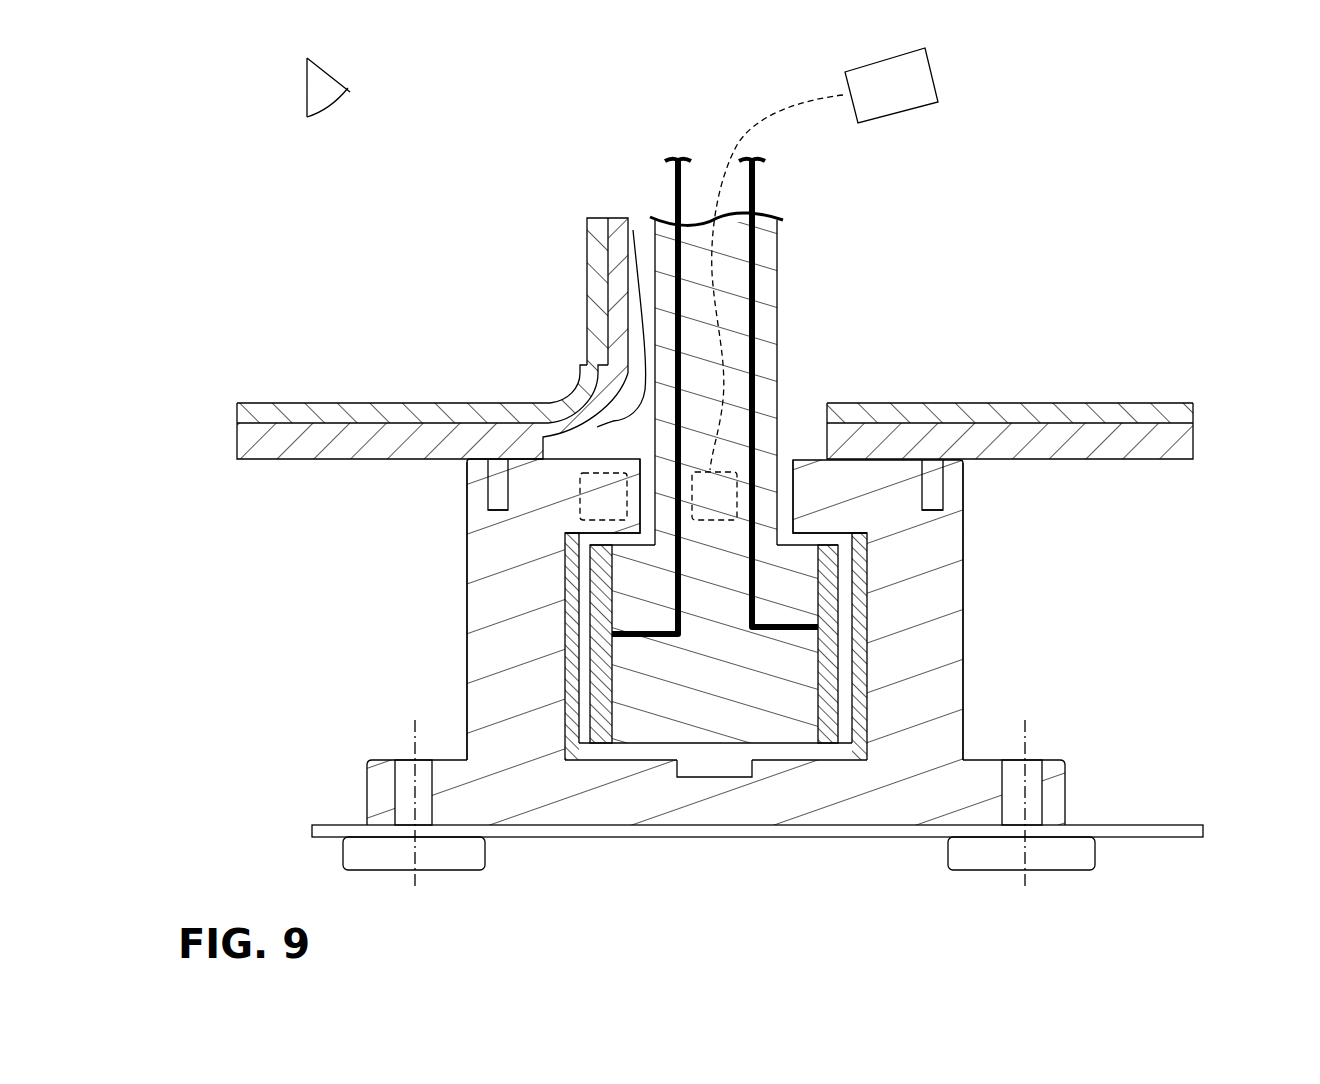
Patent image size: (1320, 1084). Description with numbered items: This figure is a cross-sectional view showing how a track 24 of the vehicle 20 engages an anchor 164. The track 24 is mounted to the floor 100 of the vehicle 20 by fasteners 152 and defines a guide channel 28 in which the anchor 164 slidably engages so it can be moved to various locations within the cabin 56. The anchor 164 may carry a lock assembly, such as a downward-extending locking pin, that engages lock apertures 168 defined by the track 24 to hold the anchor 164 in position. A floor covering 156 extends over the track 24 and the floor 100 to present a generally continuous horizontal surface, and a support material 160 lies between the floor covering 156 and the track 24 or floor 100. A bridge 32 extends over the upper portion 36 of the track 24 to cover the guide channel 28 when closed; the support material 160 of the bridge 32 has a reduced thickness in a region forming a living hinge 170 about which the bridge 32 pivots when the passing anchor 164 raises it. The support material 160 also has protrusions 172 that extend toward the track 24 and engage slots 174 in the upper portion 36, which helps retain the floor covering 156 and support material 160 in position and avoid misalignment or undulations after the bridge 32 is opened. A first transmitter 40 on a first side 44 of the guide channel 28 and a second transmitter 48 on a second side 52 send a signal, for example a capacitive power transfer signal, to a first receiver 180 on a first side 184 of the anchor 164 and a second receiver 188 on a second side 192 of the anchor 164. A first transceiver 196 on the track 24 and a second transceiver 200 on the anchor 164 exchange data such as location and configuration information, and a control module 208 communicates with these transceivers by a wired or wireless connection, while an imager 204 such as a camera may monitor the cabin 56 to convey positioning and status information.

The vehicle 20 is at (226, 177).
The track 24 is at (972, 700).
The guide channel 28 is at (628, 750).
The bridge 32 is at (578, 333).
The upper portion 36 is at (837, 500).
The first transmitter 40 is at (562, 637).
The first side 44 is at (503, 700).
The second transmitter 48 is at (867, 625).
The second side 52 is at (923, 597).
The cabin 56 is at (1060, 268).
The floor 100 is at (325, 825).
The fastener 152 is at (403, 760).
The floor covering 156 is at (295, 408).
The support material 160 is at (250, 445).
The anchor 164 is at (784, 330).
The lock aperture 168 is at (690, 777).
The living hinge 170 is at (633, 230).
The protrusion 172 is at (493, 490).
The slot 174 is at (496, 508).
The first receiver 180 is at (597, 730).
The first side 184 is at (565, 720).
The second receiver 188 is at (830, 732).
The second side 192 is at (865, 735).
The first transceiver 196 is at (577, 516).
The second transceiver 200 is at (728, 470).
The imager 204 is at (323, 68).
The control module 208 is at (905, 112).